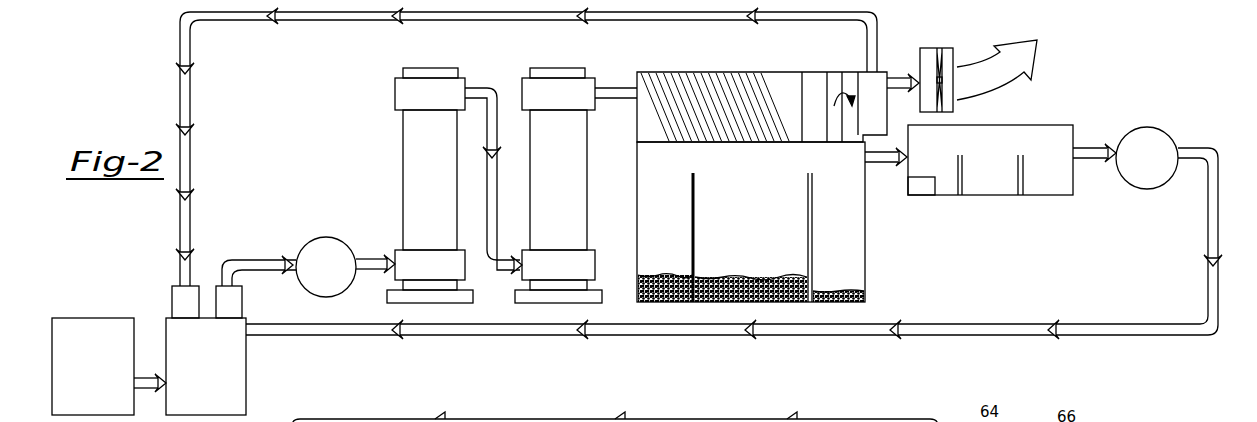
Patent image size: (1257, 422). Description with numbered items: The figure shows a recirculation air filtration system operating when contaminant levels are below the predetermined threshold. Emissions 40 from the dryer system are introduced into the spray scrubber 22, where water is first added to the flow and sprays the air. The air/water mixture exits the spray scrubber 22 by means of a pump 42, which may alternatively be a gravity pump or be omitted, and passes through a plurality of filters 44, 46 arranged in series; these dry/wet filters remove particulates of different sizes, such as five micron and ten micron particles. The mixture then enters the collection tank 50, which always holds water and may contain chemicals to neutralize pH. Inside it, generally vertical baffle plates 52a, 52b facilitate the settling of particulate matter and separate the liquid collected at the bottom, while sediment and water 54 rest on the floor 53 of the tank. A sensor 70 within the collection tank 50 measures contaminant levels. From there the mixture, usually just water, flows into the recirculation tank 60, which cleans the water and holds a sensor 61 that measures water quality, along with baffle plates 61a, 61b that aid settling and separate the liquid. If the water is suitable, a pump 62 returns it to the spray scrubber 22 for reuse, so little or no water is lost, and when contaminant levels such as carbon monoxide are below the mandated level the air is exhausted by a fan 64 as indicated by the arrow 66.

The emissions 40 is at (113, 318).
The spray scrubber 22 is at (246, 372).
The pump 42 is at (318, 238).
The filter 44 is at (412, 84).
The filter 46 is at (540, 84).
The collection tank 50 is at (851, 201).
The baffle plate 52a is at (696, 247).
The baffle plate 52b is at (807, 218).
The floor 53 is at (866, 292).
The sediment and water 54 is at (654, 290).
The recirculation tank 60 is at (1037, 125).
The sensor 61 is at (925, 190).
The baffle plate 61a is at (955, 183).
The baffle plate 61b is at (1013, 183).
The pump 62 is at (1147, 127).
The fan 64 is at (919, 62).
The arrow 66 is at (985, 72).
The sensor 70 is at (521, 392).